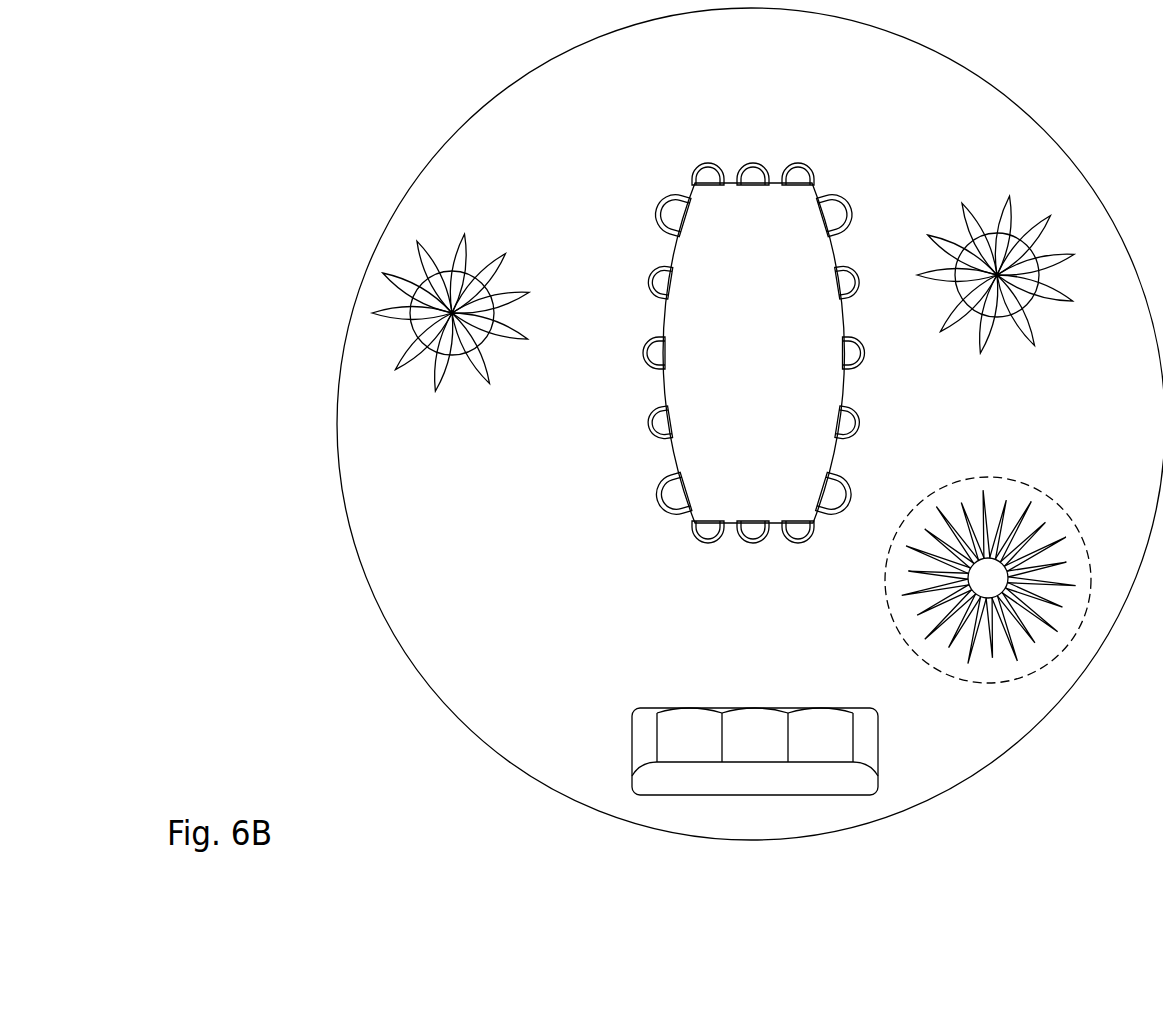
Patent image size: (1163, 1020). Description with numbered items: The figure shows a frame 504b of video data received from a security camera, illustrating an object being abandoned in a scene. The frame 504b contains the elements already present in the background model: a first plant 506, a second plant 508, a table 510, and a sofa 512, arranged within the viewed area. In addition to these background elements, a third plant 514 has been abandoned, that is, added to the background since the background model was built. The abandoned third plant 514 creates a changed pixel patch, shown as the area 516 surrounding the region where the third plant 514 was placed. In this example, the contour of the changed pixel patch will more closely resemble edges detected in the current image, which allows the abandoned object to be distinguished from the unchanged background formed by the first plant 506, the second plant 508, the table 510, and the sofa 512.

The frame 504b is at (400, 203).
The first plant 506 is at (515, 292).
The second plant 508 is at (937, 234).
The table 510 is at (745, 383).
The sofa 512 is at (634, 708).
The third plant 514 is at (902, 571).
The area 516 is at (1018, 478).